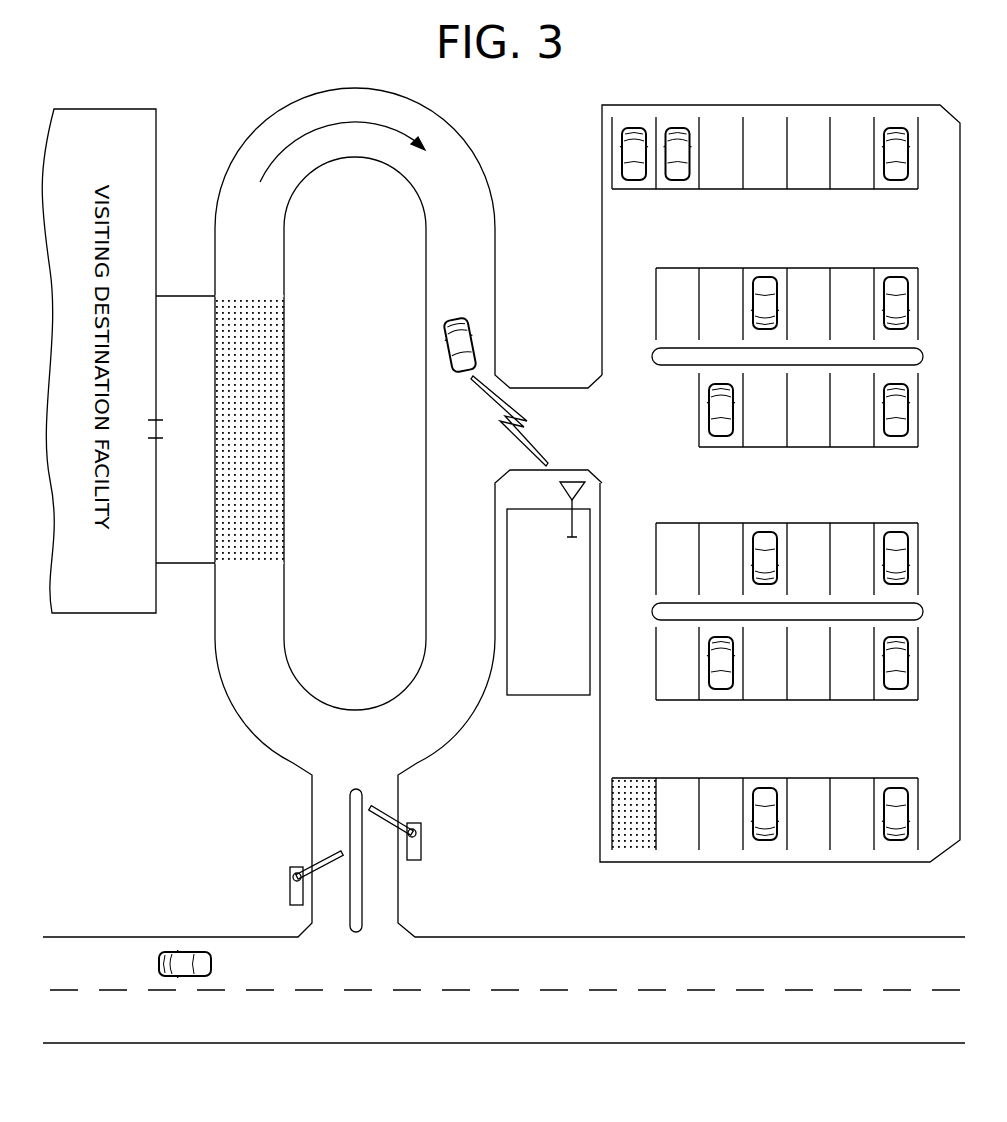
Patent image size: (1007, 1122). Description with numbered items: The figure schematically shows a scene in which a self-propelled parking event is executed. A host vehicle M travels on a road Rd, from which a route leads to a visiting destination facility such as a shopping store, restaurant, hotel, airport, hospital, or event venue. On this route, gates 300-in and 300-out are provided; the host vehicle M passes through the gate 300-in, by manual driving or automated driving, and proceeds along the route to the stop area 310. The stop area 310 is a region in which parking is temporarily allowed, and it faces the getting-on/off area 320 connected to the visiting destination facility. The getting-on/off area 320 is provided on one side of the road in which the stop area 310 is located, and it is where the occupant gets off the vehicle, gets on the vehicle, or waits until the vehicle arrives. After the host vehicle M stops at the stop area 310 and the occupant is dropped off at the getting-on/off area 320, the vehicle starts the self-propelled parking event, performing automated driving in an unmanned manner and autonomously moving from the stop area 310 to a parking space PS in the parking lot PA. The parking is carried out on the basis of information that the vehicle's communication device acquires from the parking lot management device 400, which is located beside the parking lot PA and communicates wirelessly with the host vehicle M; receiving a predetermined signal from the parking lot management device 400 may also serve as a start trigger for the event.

The stop area 310 is at (228, 445).
The getting-on/off area 320 is at (163, 397).
The parking lot management device 400 is at (546, 698).
The gate (entrance gate) 300-in is at (283, 856).
The gate (exit gate) 300-out is at (443, 836).
The host vehicle M is at (185, 951).
The parking lot PA is at (763, 498).
The parking space PS is at (633, 778).
The road Rd is at (370, 977).